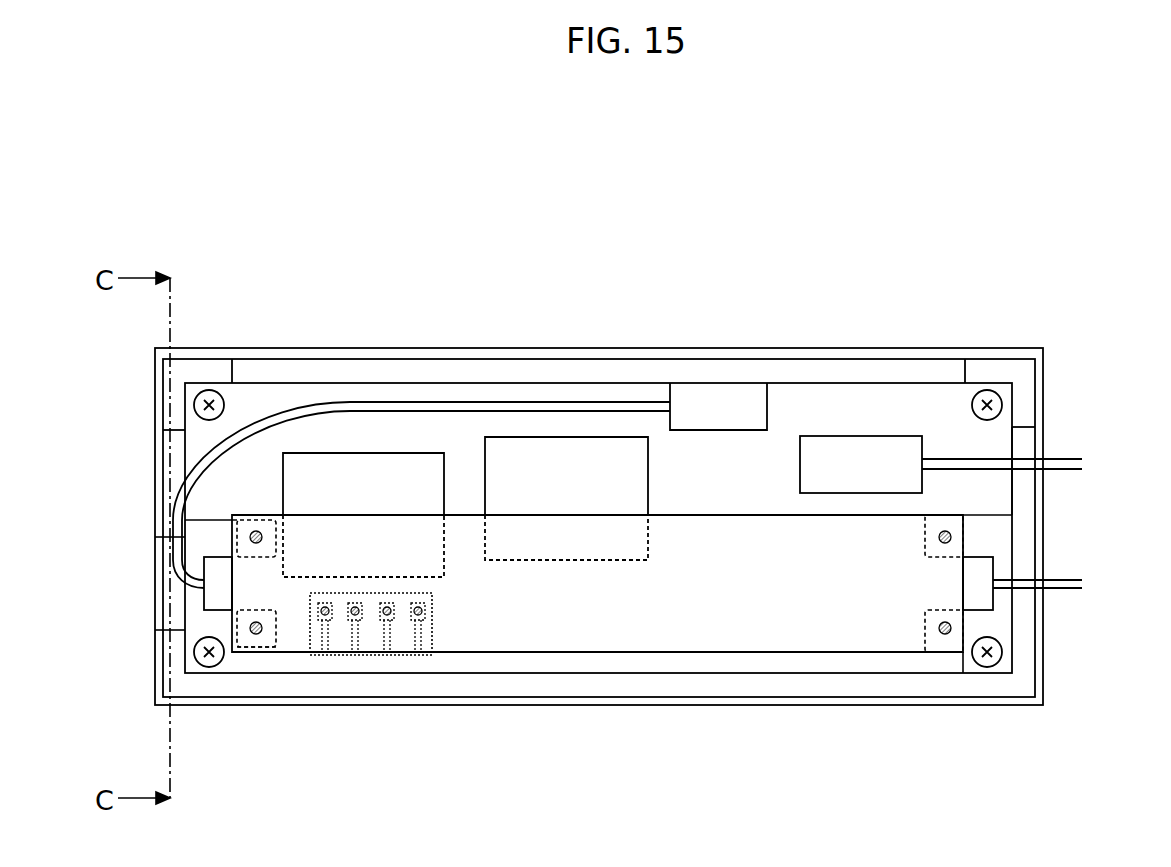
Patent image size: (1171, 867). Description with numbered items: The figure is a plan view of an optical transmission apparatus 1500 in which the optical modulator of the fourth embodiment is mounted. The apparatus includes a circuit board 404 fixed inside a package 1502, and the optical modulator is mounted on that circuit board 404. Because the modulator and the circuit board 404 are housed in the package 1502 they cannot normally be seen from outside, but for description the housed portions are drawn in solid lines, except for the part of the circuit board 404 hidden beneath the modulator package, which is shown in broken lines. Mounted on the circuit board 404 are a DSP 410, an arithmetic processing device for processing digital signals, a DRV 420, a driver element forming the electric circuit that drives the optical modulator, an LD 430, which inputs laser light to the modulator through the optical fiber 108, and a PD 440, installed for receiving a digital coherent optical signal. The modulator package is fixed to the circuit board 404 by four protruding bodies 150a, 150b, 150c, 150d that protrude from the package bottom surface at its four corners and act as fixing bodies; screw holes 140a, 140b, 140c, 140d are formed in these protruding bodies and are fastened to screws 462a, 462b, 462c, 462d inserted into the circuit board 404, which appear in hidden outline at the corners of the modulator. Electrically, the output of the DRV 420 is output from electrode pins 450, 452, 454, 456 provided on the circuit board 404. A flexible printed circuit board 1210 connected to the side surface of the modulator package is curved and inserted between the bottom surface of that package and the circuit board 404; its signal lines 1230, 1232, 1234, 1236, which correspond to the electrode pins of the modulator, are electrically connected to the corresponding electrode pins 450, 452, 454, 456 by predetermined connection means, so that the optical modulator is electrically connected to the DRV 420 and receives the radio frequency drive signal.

The optical transmission apparatus 1500 is at (226, 170).
The package 1502 is at (213, 348).
The circuit board 404 is at (258, 402).
The DRV (Driver) 420 is at (367, 470).
The DSP (Digital Signal Processor) 410 is at (540, 477).
The optical fiber 108 is at (622, 405).
The LD (Laser Diode) 430 is at (712, 402).
The PD (Photo Diode) 440 is at (855, 462).
The screw hole 140a is at (237, 519).
The screw hole 140b is at (250, 650).
The screw hole 140c is at (937, 653).
The screw hole 140d is at (963, 517).
The protruding body 150a is at (235, 530).
The protruding body 150b is at (190, 630).
The protruding body 150c is at (963, 655).
The protruding body 150d is at (968, 523).
The screw 462a is at (237, 538).
The screw 462b is at (237, 625).
The screw 462c is at (963, 627).
The screw 462d is at (963, 537).
The flexible printed circuit board 1210 is at (430, 628).
The electrode pin 450 is at (300, 654).
The electrode pin 452 is at (350, 620).
The electrode pin 454 is at (383, 620).
The electrode pin 456 is at (425, 620).
The signal line 1230 is at (318, 620).
The signal line 1232 is at (357, 654).
The signal line 1234 is at (388, 654).
The signal line 1236 is at (417, 640).